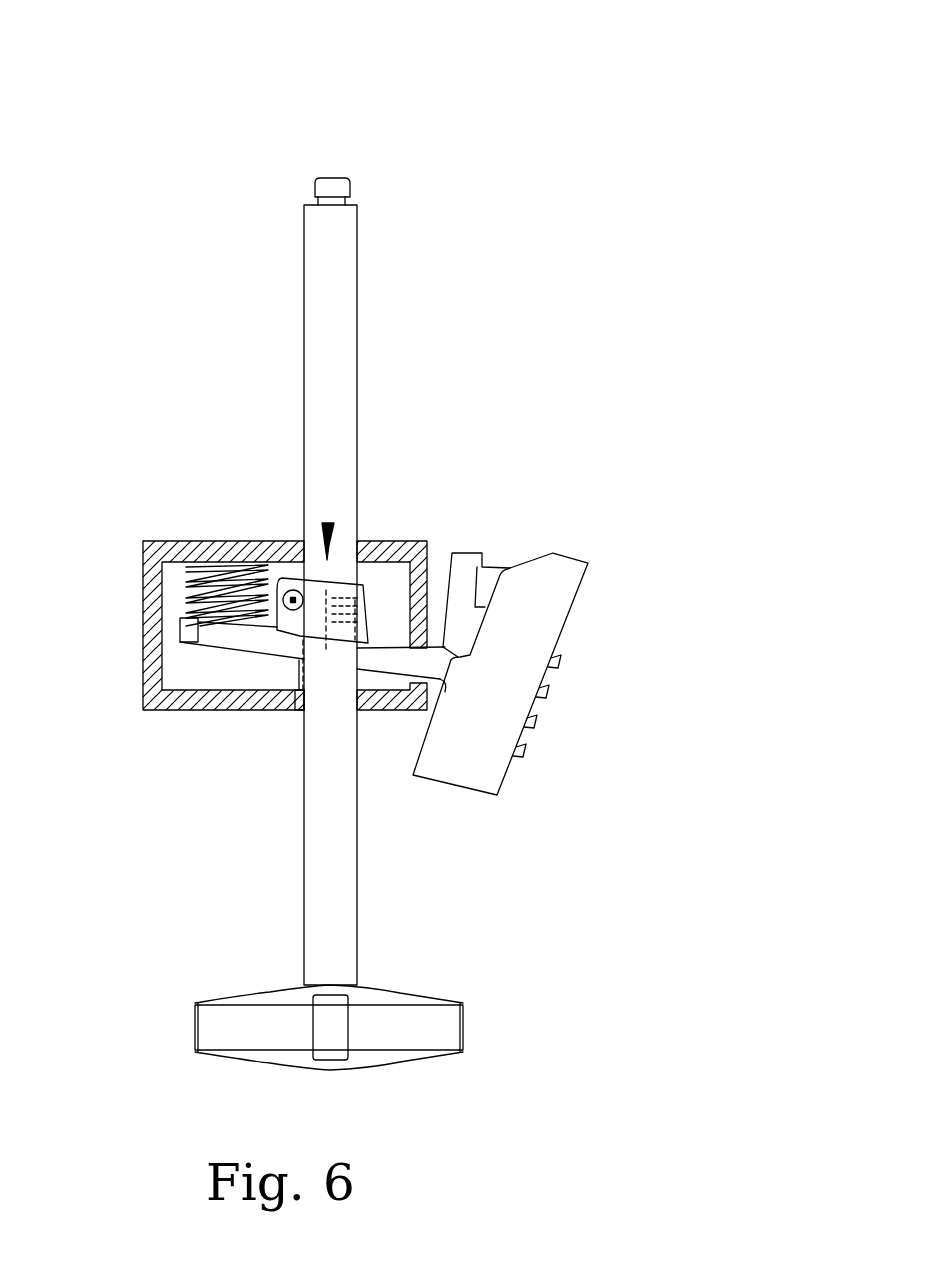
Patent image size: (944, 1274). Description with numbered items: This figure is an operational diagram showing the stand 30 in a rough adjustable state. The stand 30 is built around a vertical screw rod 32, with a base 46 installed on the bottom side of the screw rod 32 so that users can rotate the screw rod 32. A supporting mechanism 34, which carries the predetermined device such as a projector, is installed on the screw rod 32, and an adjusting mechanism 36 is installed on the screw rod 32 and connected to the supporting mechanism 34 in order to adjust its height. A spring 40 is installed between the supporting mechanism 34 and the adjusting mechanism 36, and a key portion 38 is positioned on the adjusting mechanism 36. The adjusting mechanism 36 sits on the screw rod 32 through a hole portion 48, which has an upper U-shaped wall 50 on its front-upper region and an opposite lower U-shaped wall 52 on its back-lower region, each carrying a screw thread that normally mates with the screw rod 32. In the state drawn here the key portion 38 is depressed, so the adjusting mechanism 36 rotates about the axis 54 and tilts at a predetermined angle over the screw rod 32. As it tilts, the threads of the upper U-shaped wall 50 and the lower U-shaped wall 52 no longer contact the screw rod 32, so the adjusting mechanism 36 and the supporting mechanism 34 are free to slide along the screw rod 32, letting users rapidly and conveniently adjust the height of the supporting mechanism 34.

The stand 30 is at (550, 67).
The screw rod 32 is at (345, 307).
The supporting mechanism 34 is at (143, 675).
The adjusting mechanism 36 is at (230, 642).
The key portion 38 is at (555, 620).
The spring 40 is at (190, 600).
The base 46 is at (448, 1027).
The hole portion 48 is at (328, 523).
The upper U-shaped wall 50 is at (348, 583).
The lower U-shaped wall 52 is at (298, 703).
The axis 54 is at (292, 588).